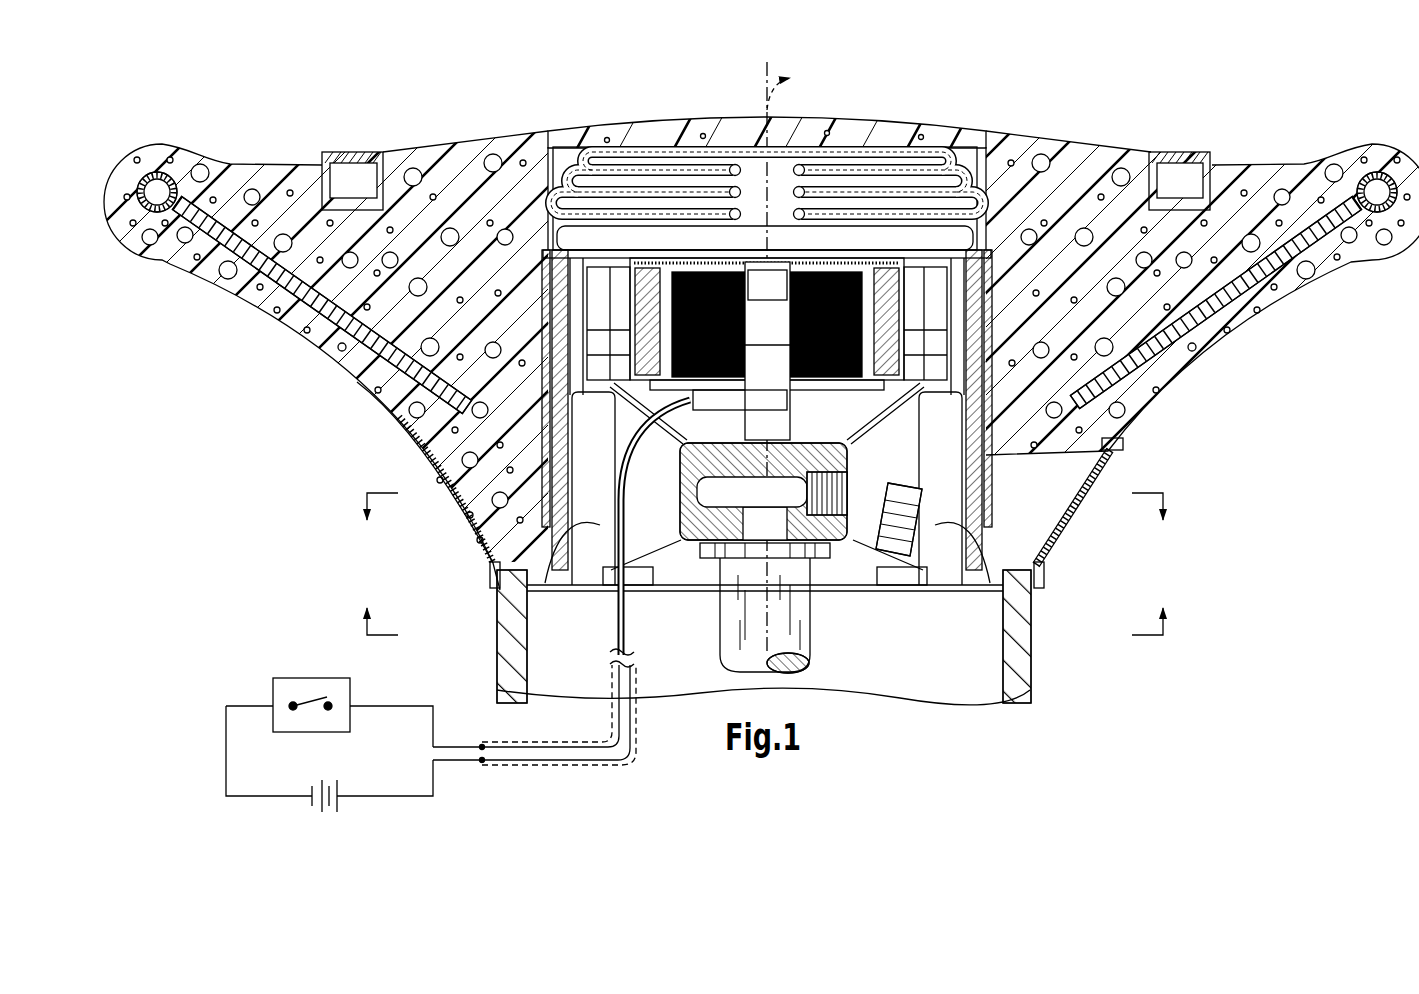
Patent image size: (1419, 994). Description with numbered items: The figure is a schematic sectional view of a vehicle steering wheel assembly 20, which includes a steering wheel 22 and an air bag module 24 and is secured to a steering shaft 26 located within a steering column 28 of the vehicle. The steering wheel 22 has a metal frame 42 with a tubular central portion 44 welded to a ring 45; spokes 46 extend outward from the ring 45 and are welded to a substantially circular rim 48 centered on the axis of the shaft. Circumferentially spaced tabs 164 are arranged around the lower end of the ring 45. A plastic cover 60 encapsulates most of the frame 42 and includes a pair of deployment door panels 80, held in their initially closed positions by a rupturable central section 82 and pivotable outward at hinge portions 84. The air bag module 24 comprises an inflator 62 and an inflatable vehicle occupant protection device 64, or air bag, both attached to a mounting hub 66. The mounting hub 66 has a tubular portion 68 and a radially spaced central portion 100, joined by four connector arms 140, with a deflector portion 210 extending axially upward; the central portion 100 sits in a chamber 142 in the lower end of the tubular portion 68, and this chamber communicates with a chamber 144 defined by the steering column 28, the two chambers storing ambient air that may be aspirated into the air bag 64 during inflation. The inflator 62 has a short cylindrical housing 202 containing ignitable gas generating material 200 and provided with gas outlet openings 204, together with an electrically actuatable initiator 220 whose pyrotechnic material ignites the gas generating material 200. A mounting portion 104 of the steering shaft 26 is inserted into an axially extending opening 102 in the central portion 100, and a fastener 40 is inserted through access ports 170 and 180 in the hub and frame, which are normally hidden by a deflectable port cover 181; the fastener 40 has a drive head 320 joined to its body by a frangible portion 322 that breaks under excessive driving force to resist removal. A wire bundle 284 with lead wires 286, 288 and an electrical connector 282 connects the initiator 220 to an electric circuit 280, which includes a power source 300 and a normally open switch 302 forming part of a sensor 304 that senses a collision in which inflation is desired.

The vehicle steering wheel assembly 20 is at (1124, 60).
The steering wheel 22 is at (1185, 386).
The air bag module 24 is at (1107, 390).
The steering shaft 26 is at (782, 627).
The steering column 28 is at (1032, 645).
The fastener 40 is at (852, 490).
The frame 42 is at (513, 468).
The tubular central portion 44 is at (548, 487).
The ring 45 is at (533, 532).
The spokes 46 is at (353, 367).
The rim 48 is at (1370, 172).
The plastic cover 60 is at (709, 300).
The inflator 62 is at (910, 258).
The inflatable vehicle occupant protection device 64 is at (953, 142).
The mounting hub 66 is at (968, 500).
The tubular portion 68 is at (520, 440).
The deployment door panels 80 is at (657, 133).
The rupturable central section 82 is at (777, 135).
The hinge portions 84 is at (545, 142).
The central portion 100 is at (700, 523).
The axially extending opening 102 is at (753, 453).
The mounting portion 104 is at (780, 453).
The connector arms 140 is at (637, 527).
The chamber 142 is at (851, 404).
The chamber 144 is at (763, 636).
The tabs 164 is at (560, 575).
The access port 170 is at (950, 460).
The access port 180 is at (995, 455).
The port cover 181 is at (1065, 530).
The ignitable gas generating material 200 is at (700, 272).
The housing 202 is at (640, 300).
The gas outlet openings 204 is at (617, 340).
The deflector portion 210 is at (580, 405).
The electrically actuatable initiator 220 is at (775, 313).
The electric circuit 280 is at (429, 749).
The electrical connector 282 is at (780, 398).
The wire bundle 284 is at (577, 765).
The lead wire 286 is at (453, 745).
The lead wire 288 is at (447, 762).
The power source 300 is at (333, 805).
The normally open switch 302 is at (303, 695).
The sensor 304 is at (357, 690).
The drive head 320 is at (857, 535).
The frangible portion 322 is at (877, 510).